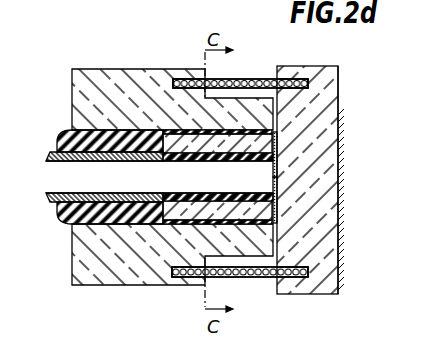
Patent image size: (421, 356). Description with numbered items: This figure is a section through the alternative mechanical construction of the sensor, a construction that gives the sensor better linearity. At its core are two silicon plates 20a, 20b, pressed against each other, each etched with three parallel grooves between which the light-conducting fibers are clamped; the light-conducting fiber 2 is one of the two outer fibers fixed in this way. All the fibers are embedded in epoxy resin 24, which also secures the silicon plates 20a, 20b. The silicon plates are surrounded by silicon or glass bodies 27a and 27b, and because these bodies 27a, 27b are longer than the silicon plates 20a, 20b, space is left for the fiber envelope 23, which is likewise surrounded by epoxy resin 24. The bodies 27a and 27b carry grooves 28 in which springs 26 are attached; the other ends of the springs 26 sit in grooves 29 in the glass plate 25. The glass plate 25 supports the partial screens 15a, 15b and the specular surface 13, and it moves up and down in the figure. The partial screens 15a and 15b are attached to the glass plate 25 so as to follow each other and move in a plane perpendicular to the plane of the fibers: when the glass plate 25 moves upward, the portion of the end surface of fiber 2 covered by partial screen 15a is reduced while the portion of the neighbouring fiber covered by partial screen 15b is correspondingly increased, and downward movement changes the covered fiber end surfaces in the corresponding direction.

The light-conducting fiber 2 is at (72, 183).
The specular surface 13 is at (339, 175).
The partial screen 15a is at (277, 153).
The partial screen 15b is at (277, 202).
The silicon plate 20a is at (182, 140).
The silicon plate 20b is at (182, 213).
The fiber envelope 23 is at (50, 147).
The epoxy resin 24 is at (68, 134).
The glass plate 25 is at (330, 97).
The spring 26 is at (251, 80).
The silicon or glass body 27a is at (100, 79).
The silicon or glass body 27b is at (86, 255).
The groove 28 is at (190, 79).
The groove 29 is at (300, 79).